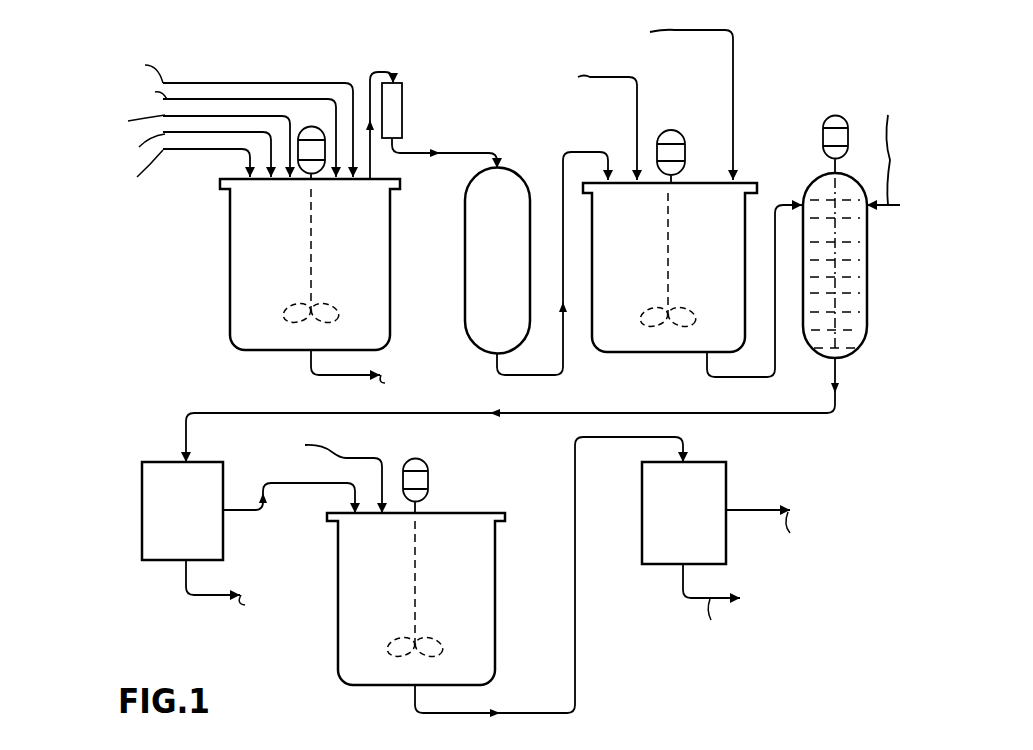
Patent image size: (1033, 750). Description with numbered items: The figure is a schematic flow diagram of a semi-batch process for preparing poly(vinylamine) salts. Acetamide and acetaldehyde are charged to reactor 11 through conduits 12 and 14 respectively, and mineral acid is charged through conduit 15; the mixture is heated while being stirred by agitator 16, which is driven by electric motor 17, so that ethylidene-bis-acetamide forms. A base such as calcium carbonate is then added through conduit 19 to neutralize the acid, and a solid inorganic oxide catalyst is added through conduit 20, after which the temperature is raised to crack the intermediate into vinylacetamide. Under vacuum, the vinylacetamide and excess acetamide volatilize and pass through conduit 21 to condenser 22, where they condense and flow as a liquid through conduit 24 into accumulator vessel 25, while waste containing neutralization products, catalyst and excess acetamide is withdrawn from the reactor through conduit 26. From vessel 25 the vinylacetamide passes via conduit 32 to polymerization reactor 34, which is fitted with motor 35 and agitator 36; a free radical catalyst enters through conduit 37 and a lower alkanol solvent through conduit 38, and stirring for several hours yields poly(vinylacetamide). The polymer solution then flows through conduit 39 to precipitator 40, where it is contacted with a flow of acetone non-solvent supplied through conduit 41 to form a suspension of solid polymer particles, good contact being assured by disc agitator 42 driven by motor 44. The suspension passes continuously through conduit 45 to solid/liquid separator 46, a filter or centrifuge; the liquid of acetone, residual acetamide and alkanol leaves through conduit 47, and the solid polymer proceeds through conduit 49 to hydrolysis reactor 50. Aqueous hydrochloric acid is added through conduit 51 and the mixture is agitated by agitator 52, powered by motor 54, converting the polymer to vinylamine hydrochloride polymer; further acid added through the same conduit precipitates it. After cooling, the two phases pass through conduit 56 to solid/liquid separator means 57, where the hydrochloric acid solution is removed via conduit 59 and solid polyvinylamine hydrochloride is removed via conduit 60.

The reactor 11 is at (230, 252).
The conduit 12 is at (278, 83).
The conduit 14 is at (245, 99).
The conduit 15 is at (213, 116).
The agitator 16 is at (313, 313).
The electric motor 17 is at (312, 127).
The conduit 19 is at (180, 150).
The conduit 20 is at (212, 133).
The conduit 21 is at (388, 72).
The condenser 22 is at (402, 100).
The conduit 24 is at (467, 153).
The accumulator vessel 25 is at (524, 180).
The conduit 26 is at (311, 371).
The conduit 32 is at (545, 378).
The polymerization reactor 34 is at (592, 255).
The motor 35 is at (680, 135).
The agitator 36 is at (672, 304).
The conduit 37 is at (637, 125).
The conduit 38 is at (733, 95).
The conduit 39 is at (733, 377).
The precipitator 40 is at (808, 186).
The conduit 41 is at (876, 210).
The disc agitator 42 is at (834, 188).
The motor 44 is at (823, 123).
The conduit 45 is at (750, 415).
The solid/liquid separator 46 is at (142, 487).
The conduit 47 is at (185, 590).
The conduit 49 is at (295, 486).
The hydrolysis reactor 50 is at (495, 596).
The conduit 51 is at (383, 455).
The agitator 52 is at (417, 606).
The motor 54 is at (430, 465).
The conduit 56 is at (500, 713).
The solid/liquid separator means 57 is at (726, 482).
The conduit 59 is at (683, 598).
The conduit 60 is at (782, 515).